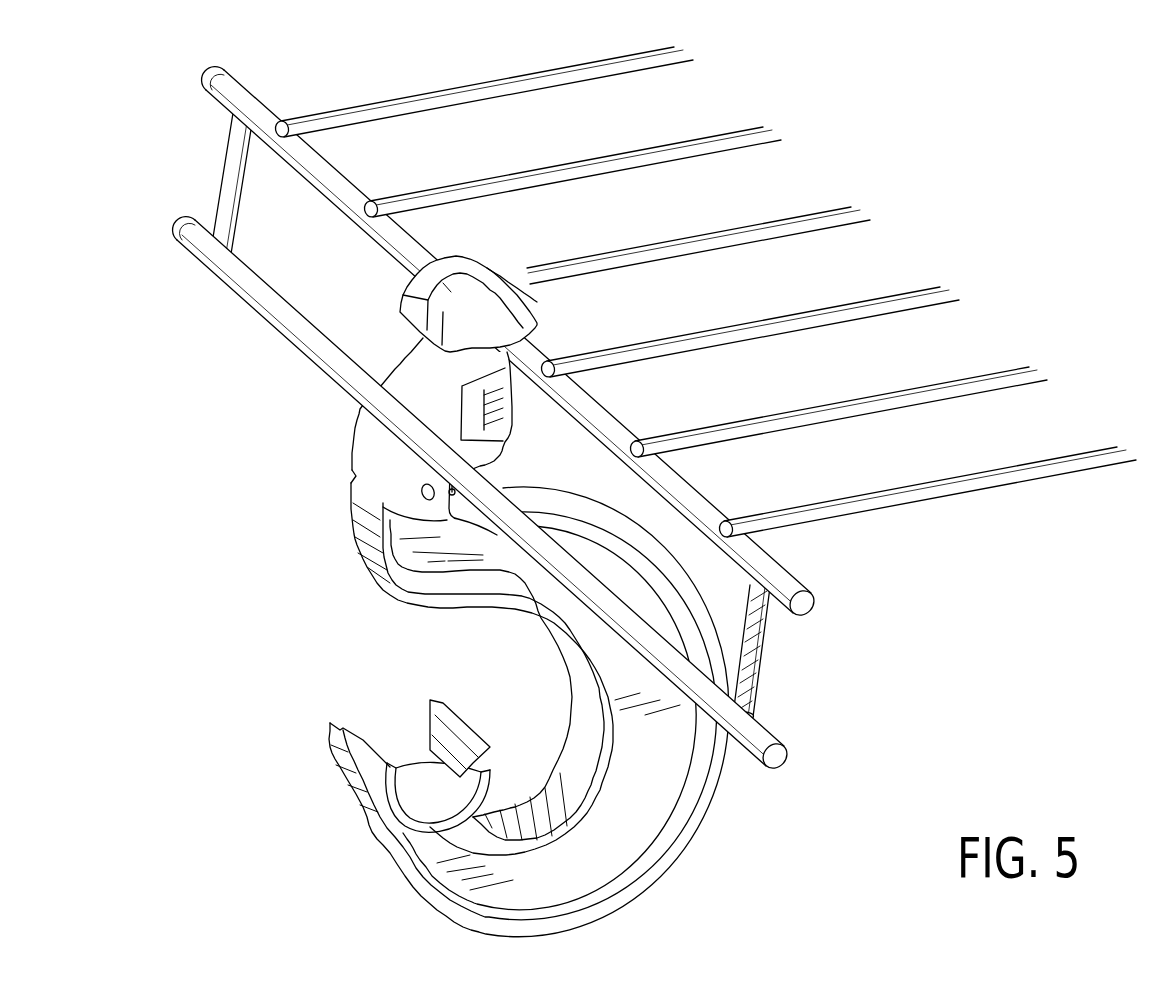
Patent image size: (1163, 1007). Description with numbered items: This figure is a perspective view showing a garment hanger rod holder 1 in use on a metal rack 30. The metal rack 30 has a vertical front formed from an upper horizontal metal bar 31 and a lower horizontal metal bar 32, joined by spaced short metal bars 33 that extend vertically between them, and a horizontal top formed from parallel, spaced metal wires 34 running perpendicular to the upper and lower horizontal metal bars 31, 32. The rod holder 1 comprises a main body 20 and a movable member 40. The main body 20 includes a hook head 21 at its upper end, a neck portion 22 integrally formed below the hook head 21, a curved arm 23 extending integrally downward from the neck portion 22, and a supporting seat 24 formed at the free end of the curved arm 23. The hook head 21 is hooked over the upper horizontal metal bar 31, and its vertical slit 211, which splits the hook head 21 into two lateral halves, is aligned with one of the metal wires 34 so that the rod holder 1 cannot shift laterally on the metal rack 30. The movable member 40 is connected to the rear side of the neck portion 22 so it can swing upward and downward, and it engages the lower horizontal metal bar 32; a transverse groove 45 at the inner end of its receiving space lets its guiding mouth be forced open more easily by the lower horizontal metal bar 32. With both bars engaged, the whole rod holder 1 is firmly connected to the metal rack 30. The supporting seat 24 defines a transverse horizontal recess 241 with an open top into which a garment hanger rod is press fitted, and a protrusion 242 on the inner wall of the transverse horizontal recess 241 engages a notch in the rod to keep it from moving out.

The garment hanger rod holder 1 is at (654, 492).
The main body 20 is at (505, 564).
The hook head 21 is at (432, 272).
The vertical slit 211 is at (447, 288).
The neck portion 22 is at (408, 478).
The curved arm 23 is at (658, 762).
The supporting seat 24 is at (385, 784).
The transverse horizontal recess 241 is at (433, 793).
The protrusion 242 is at (451, 731).
The metal rack 30 is at (669, 383).
The upper horizontal metal bar 31 is at (778, 578).
The lower horizontal metal bar 32 is at (765, 733).
The short metal bar 33 is at (762, 640).
The metal wire 34 is at (704, 240).
The movable member 40 is at (452, 494).
The transverse groove 45 is at (447, 457).